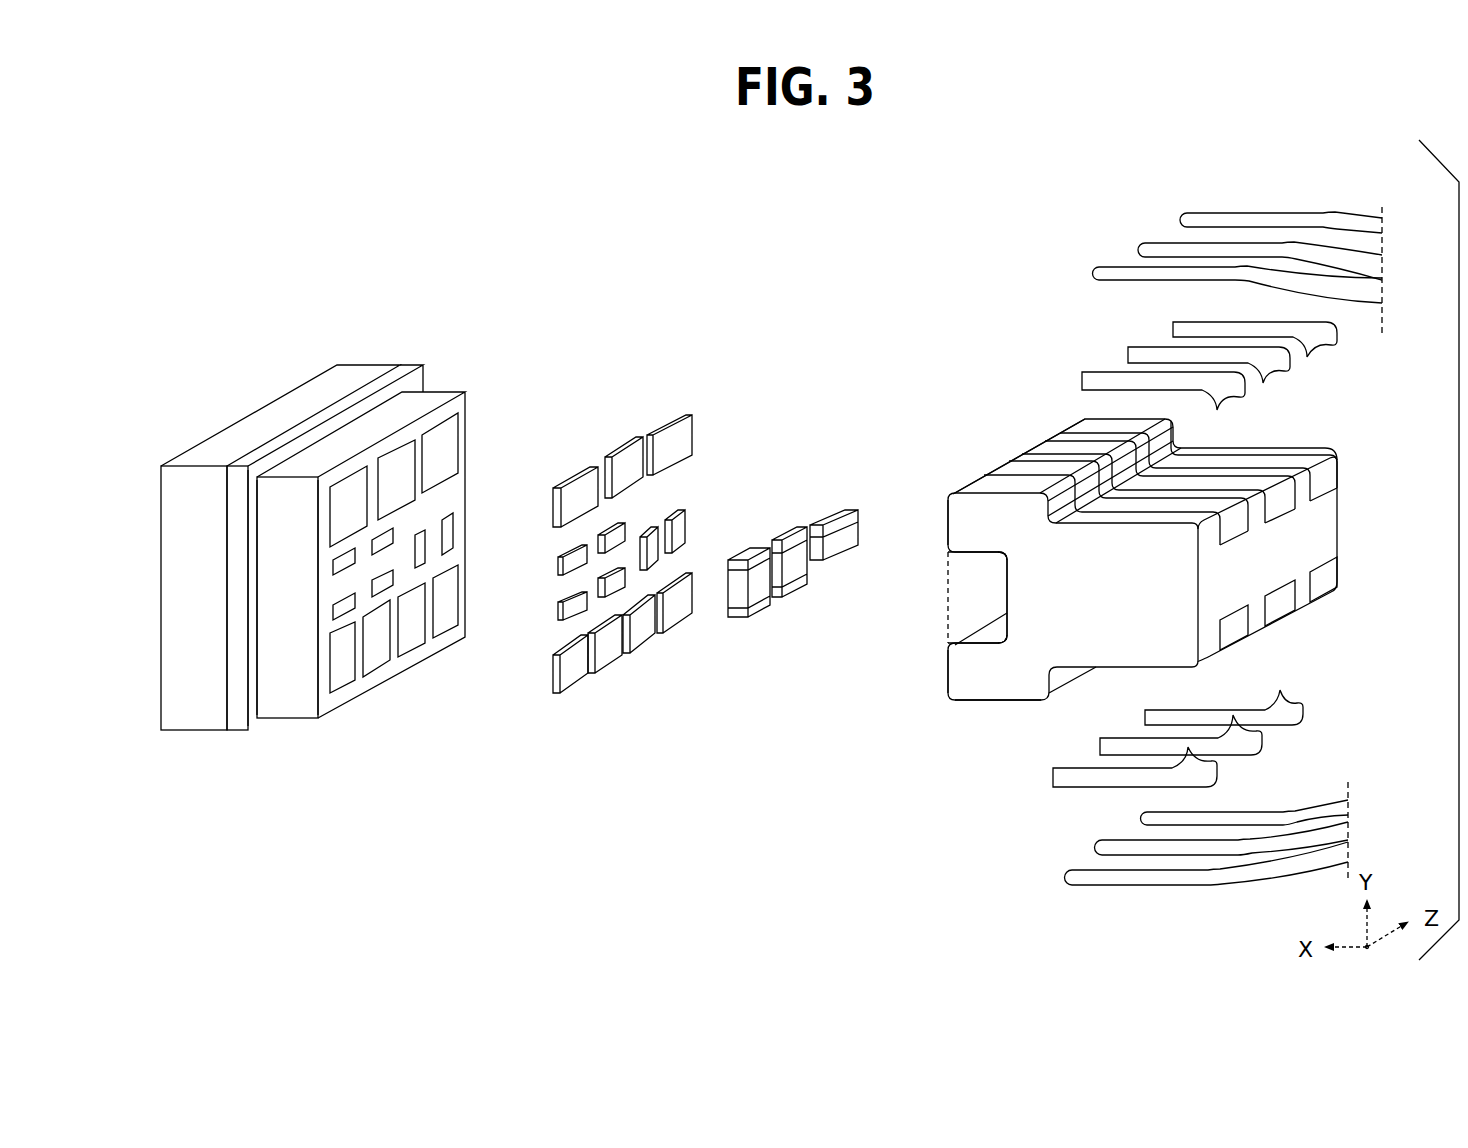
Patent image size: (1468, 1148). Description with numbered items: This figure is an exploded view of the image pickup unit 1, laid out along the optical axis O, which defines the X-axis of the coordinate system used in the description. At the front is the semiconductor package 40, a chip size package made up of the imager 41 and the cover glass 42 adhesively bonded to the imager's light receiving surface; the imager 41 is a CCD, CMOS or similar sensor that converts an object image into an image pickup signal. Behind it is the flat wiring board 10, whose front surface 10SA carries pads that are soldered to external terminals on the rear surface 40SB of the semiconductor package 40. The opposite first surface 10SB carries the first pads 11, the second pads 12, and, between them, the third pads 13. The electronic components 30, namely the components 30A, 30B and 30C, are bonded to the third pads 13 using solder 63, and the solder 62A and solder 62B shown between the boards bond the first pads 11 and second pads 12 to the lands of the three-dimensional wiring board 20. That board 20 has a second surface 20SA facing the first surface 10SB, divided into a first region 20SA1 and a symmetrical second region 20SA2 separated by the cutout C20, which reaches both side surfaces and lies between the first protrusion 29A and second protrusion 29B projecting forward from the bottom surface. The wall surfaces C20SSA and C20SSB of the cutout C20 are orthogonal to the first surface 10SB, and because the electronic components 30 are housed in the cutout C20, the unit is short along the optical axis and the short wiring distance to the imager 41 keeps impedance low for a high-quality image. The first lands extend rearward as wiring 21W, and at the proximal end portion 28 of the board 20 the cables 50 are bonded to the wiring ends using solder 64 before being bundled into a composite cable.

The image pickup unit 1 is at (250, 290).
The flat wiring board 10 is at (443, 392).
The front surface 10SA is at (254, 705).
The first surface 10SB is at (323, 704).
The first pads 11 is at (460, 450).
The second pads 12 is at (462, 573).
The third pads 13 is at (453, 523).
The three-dimensional wiring board 20 is at (1070, 425).
The second surface 20SA is at (940, 600).
The first region 20SA1 is at (935, 515).
The second region 20SA2 is at (940, 670).
The wiring 21W is at (1292, 443).
The proximal end portion 28 is at (1283, 623).
The first protrusion 29A is at (1013, 462).
The second protrusion 29B is at (1013, 700).
The electronic component 30 is at (880, 703).
The electronic component 30A is at (750, 617).
The electronic component 30B is at (797, 593).
The electronic component 30C is at (838, 557).
The semiconductor package 40 is at (432, 285).
The imager 41 is at (408, 365).
The cover glass 42 is at (353, 365).
The rear surface 40SB is at (250, 693).
The cable 50 is at (1160, 242).
The first solder 62A is at (628, 438).
The second solder 62B is at (607, 673).
The solder 63 is at (560, 620).
The solder 64 is at (1150, 347).
The cutout C20 is at (970, 593).
The first wall surface C20SSA is at (977, 567).
The second wall surface C20SSB is at (985, 630).
The optical axis O is at (160, 555).